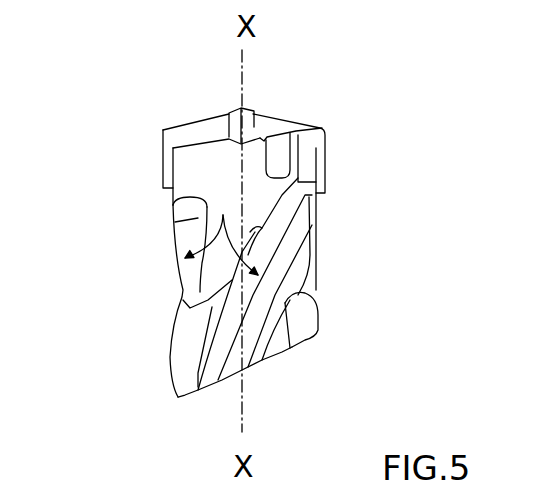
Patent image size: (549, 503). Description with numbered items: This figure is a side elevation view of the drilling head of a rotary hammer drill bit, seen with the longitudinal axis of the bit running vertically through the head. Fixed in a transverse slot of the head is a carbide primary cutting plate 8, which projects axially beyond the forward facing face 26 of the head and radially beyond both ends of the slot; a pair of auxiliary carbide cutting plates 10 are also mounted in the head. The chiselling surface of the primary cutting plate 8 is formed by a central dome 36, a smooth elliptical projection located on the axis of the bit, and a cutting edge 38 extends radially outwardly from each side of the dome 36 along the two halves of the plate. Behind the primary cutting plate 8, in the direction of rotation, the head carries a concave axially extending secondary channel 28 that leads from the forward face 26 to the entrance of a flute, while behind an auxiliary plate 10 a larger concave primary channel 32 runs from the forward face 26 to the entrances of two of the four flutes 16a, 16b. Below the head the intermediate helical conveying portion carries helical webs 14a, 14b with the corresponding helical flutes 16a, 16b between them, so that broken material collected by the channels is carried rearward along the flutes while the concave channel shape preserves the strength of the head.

The carbide primary cutting plate 8 is at (173, 143).
The auxiliary carbide cutting plate 10 is at (303, 128).
The helical web 14a is at (300, 256).
The helical web 14b is at (185, 318).
The helical flute 16a is at (247, 295).
The helical flute 16b is at (190, 262).
The forward facing face 26 is at (258, 140).
The secondary channel 28 is at (310, 163).
The primary channel 32 is at (222, 157).
The central dome 36 is at (229, 112).
The cutting edge 38 is at (255, 140).